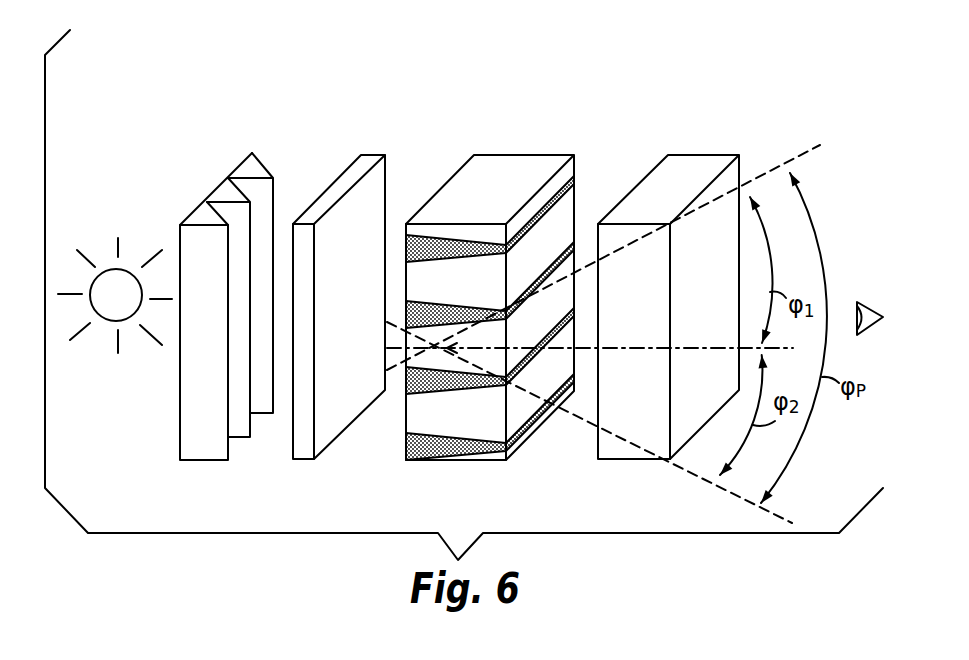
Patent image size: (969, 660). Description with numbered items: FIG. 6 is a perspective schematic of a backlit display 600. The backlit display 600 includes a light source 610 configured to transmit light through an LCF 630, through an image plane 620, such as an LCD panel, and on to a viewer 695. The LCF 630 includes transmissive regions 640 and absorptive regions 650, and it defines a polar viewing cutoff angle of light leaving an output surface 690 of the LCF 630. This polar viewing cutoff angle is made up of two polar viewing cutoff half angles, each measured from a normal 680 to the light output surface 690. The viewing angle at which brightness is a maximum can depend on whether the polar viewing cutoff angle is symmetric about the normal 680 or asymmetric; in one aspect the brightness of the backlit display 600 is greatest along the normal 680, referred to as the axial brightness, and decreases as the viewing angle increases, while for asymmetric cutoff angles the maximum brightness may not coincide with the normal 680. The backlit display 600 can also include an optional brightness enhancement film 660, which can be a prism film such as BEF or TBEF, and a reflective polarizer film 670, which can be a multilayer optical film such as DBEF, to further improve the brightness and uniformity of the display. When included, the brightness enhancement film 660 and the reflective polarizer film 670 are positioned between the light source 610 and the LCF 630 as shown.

The backlit display 600 is at (262, 85).
The light source 610 is at (111, 282).
The image plane 620 is at (687, 172).
The LCF 630 is at (511, 315).
The transmissive regions 640 is at (472, 425).
The absorptive regions 650 is at (433, 388).
The brightness enhancement film 660 is at (248, 172).
The reflective polarizer film 670 is at (353, 175).
The normal 680 is at (628, 348).
The output surface 690 is at (565, 220).
The viewer 695 is at (877, 312).